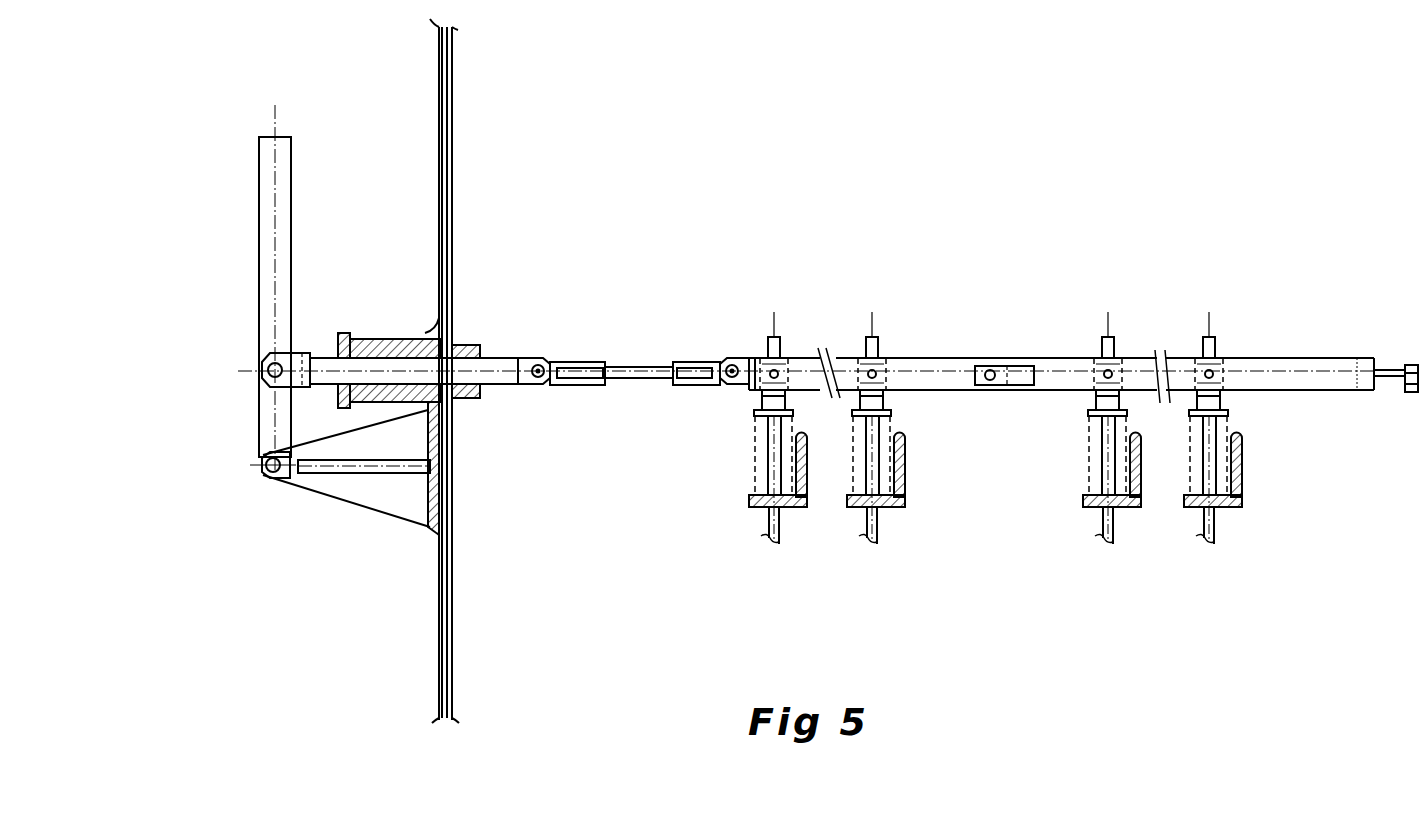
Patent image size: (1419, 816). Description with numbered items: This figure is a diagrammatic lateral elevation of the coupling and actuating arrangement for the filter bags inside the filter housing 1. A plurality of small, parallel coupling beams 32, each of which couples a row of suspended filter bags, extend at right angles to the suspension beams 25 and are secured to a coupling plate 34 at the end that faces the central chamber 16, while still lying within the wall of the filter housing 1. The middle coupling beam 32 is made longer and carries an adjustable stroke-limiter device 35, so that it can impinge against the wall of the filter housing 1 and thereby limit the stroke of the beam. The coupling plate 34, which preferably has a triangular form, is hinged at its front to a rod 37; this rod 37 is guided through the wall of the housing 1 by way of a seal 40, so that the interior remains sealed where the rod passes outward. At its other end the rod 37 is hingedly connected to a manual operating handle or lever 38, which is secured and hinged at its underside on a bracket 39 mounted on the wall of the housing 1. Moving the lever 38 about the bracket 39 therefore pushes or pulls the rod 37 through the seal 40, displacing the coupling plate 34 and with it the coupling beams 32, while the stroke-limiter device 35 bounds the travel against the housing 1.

The filter housing 1 is at (418, 371).
The central chamber 16 is at (659, 230).
The suspension beam 25 is at (807, 482).
The coupling beam 32 is at (1046, 377).
The coupling plate 34 is at (618, 377).
The adjustable stroke-limiter device 35 is at (1408, 395).
The rod 37 is at (629, 404).
The manual operating handle or lever 38 is at (268, 247).
The bracket 39 is at (320, 482).
The seal 40 is at (423, 398).